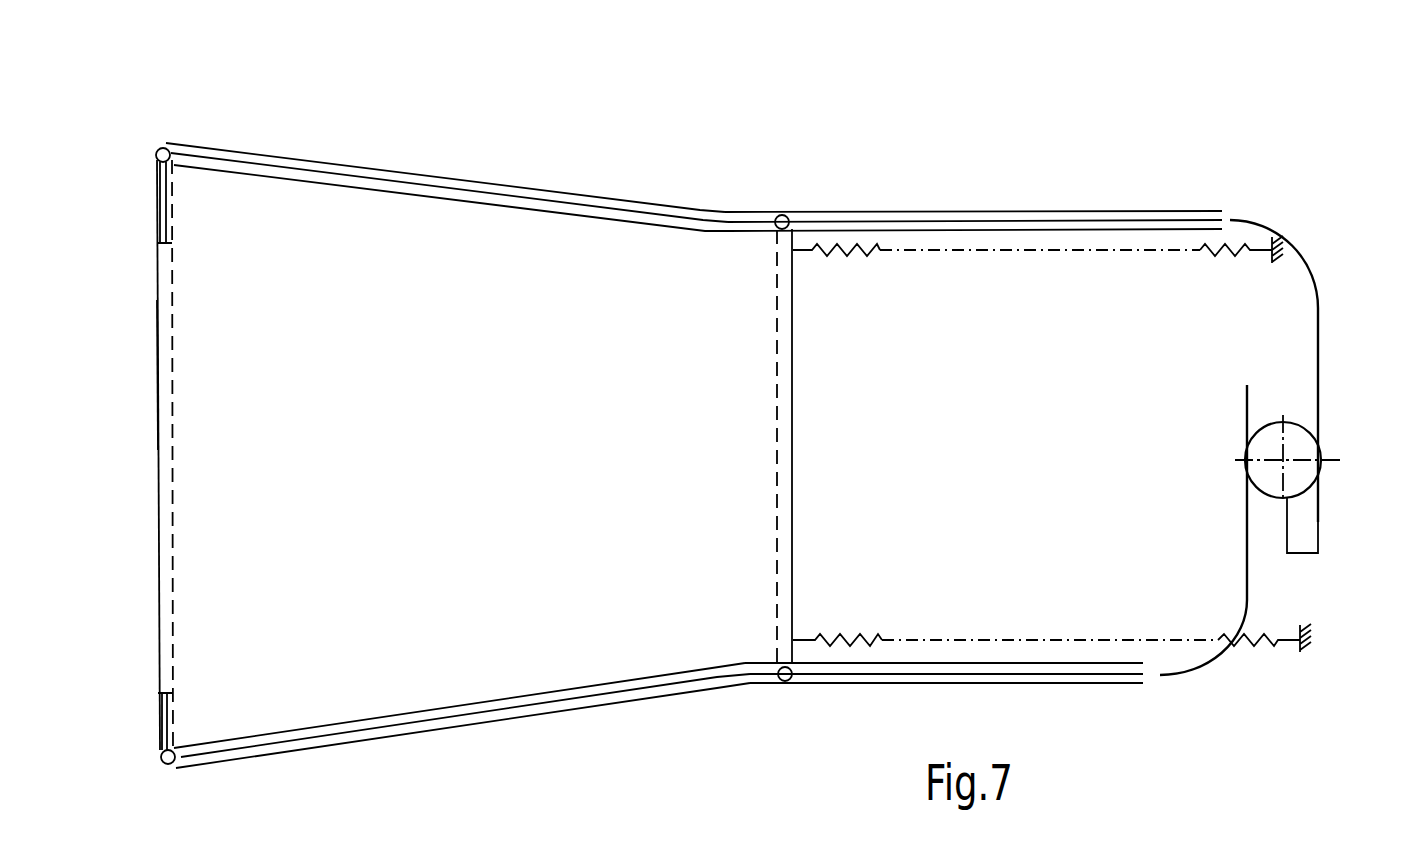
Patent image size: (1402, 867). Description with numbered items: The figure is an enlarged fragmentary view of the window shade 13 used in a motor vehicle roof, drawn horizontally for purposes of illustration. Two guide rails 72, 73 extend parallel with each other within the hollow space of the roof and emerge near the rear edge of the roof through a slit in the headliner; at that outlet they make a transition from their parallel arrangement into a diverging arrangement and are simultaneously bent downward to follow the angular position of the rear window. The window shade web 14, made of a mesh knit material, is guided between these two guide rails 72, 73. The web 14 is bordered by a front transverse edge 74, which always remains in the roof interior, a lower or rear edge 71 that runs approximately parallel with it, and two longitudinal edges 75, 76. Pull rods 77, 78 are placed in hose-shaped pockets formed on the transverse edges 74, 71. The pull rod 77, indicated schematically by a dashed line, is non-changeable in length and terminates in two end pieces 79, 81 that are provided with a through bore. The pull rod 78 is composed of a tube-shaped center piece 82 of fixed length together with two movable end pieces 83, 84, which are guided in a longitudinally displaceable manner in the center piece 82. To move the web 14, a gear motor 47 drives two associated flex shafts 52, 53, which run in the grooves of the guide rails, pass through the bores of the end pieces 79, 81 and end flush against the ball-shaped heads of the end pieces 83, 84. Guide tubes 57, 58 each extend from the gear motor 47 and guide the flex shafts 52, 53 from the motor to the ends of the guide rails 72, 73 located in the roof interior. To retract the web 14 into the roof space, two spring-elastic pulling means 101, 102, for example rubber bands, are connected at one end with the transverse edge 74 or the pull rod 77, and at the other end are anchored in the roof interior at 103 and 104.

The window shade 13 is at (745, 128).
The window shade web 14 is at (448, 473).
The gear motor 47 is at (1290, 453).
The flex shaft 52 is at (424, 184).
The flex shaft 53 is at (418, 723).
The guide tube 57 is at (1248, 583).
The guide tube 58 is at (1322, 323).
The lower or rear edge 71 is at (158, 523).
The guide rail 72 is at (995, 208).
The guide rail 73 is at (985, 662).
The front transverse edge 74 is at (793, 477).
The longitudinal edge 75 is at (472, 202).
The longitudinal edge 76 is at (440, 708).
The pull rod 77 is at (784, 392).
The pull rod 78 is at (160, 372).
The end piece 79 is at (783, 215).
The end piece 81 is at (789, 681).
The center piece 82 is at (172, 468).
The end piece 83 is at (158, 203).
The end piece 84 is at (160, 763).
The spring-elastic pulling means 101 is at (881, 253).
The spring-elastic pulling means 102 is at (876, 640).
The anchor point 103 is at (1288, 238).
The anchor point 104 is at (1310, 647).